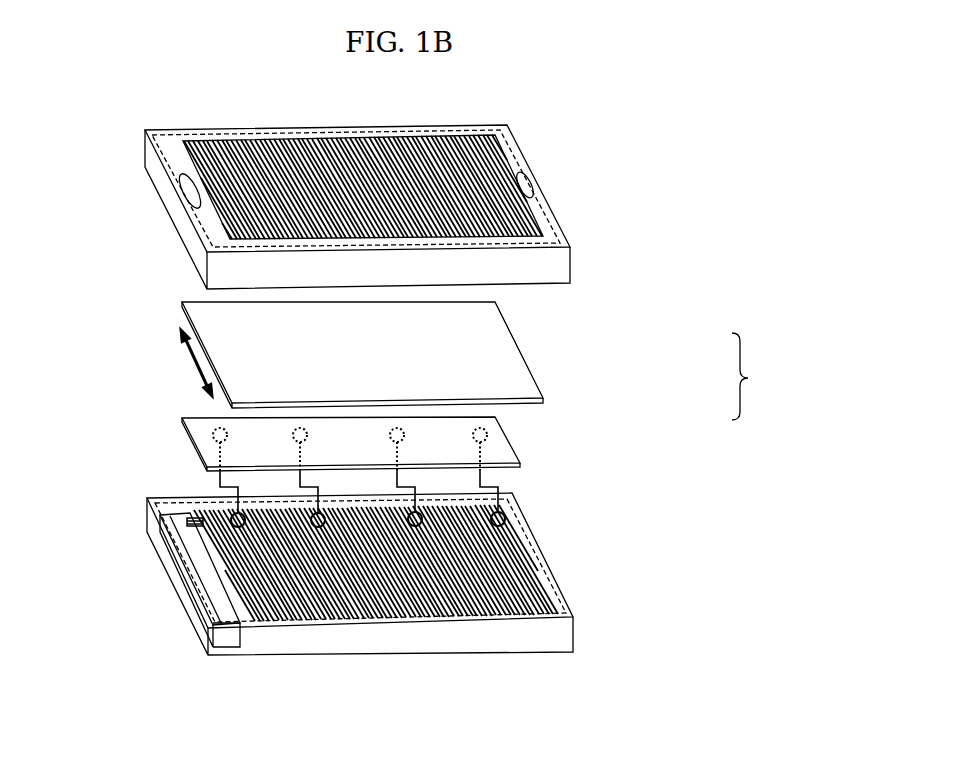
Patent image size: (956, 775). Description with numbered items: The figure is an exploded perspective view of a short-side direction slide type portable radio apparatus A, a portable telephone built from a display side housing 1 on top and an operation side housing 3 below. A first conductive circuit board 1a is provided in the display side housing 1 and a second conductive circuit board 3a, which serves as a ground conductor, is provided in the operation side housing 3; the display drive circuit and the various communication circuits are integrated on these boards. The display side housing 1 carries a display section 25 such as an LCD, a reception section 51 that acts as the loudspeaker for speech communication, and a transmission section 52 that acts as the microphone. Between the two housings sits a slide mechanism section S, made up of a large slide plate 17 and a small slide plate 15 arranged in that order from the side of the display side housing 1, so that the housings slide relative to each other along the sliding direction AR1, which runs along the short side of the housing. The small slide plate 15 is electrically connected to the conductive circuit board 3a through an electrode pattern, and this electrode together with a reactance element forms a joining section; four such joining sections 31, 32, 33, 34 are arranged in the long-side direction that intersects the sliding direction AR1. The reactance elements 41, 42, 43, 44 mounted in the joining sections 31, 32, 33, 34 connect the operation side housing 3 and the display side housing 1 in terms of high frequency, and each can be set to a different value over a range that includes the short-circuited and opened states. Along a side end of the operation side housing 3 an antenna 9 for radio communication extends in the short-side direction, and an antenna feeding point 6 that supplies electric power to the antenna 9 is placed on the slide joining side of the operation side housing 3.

The short-side direction slide type portable radio apparatus A is at (634, 144).
The display side housing 1 is at (193, 264).
The first conductive circuit board 1a is at (507, 151).
The display section 25 is at (517, 224).
The reception section 51 is at (184, 191).
The transmission section 52 is at (534, 183).
The large slide plate 17 is at (525, 352).
The small slide plate 15 is at (508, 437).
The slide mechanism section S is at (749, 376).
The sliding direction AR1 is at (178, 345).
The reactance element 41 is at (212, 438).
The reactance element 42 is at (292, 436).
The reactance element 43 is at (390, 436).
The reactance element 44 is at (473, 436).
The operation side housing 3 is at (538, 533).
The second conductive circuit board 3a is at (522, 505).
The antenna 9 is at (178, 576).
The antenna feeding point 6 is at (188, 521).
The joining section 31 is at (238, 527).
The joining section 32 is at (318, 527).
The joining section 33 is at (415, 526).
The joining section 34 is at (498, 526).